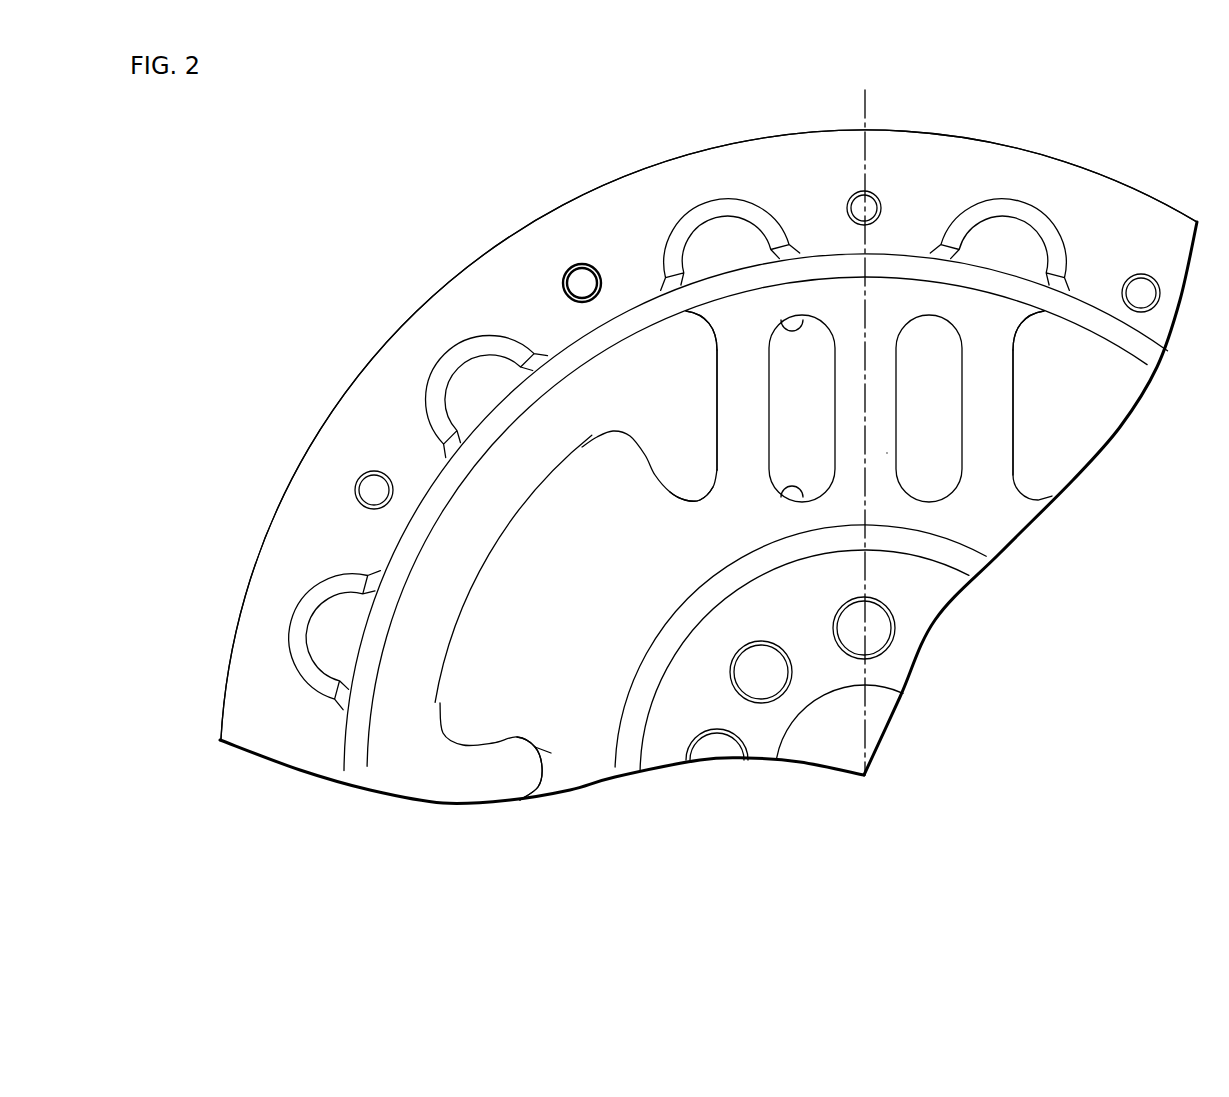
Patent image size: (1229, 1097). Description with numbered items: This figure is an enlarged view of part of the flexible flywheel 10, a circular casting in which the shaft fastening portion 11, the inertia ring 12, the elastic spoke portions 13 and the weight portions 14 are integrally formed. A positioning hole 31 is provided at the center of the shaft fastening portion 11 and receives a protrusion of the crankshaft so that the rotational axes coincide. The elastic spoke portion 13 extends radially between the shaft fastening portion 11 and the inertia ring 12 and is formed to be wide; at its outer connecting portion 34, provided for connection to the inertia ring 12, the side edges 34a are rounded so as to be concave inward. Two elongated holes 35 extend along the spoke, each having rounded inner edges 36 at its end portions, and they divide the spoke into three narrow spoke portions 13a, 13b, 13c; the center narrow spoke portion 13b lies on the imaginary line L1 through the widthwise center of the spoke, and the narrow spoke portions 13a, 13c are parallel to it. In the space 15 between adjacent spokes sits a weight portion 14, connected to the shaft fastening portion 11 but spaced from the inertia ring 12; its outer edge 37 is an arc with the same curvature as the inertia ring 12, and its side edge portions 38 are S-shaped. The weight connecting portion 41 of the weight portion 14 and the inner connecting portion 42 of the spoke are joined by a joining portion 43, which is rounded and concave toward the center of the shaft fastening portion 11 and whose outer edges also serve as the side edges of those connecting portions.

The flexible flywheel 10 is at (367, 238).
The shaft fastening portion 11 is at (933, 590).
The inertia ring 12 is at (465, 268).
The elastic spoke portion 13 is at (1050, 478).
The narrow spoke portion 13a is at (737, 387).
The center narrow spoke portion 13b is at (887, 453).
The narrow spoke portion 13c is at (1005, 413).
The weight portion 14 is at (445, 553).
The space 15 is at (522, 435).
The positioning hole 31 is at (872, 688).
The outer connecting portion 34 is at (897, 295).
The side edge 34a is at (700, 322).
The elongated hole 35 is at (816, 424).
The inner edge 36 is at (785, 313).
The outer edge 37 is at (475, 582).
The side edge portion 38 is at (627, 430).
The weight connecting portion 41 is at (598, 602).
The inner connecting portion 42 is at (837, 513).
The joining portion 43 is at (693, 520).
The imaginary line L1 is at (880, 111).